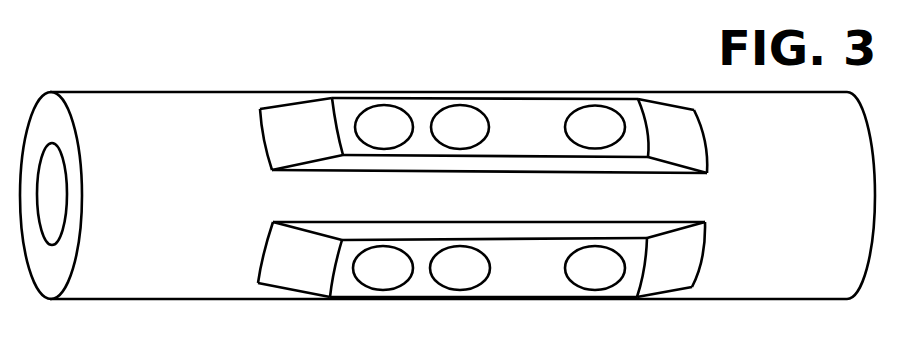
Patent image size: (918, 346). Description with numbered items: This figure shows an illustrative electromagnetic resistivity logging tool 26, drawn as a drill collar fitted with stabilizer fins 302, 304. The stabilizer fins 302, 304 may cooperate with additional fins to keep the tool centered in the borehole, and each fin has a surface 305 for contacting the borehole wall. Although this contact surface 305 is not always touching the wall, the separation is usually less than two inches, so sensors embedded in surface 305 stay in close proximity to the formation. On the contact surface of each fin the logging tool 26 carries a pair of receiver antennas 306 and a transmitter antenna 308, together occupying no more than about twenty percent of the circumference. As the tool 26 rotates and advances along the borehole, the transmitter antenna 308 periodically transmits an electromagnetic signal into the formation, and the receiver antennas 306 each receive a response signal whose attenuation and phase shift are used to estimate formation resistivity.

The electromagnetic resistivity logging tool 26 is at (107, 299).
The stabilizer fin 302 is at (460, 116).
The stabilizer fin 304 is at (265, 263).
The surface 305 is at (350, 102).
The receiver antennas 306 is at (437, 110).
The transmitter antenna 308 is at (590, 110).